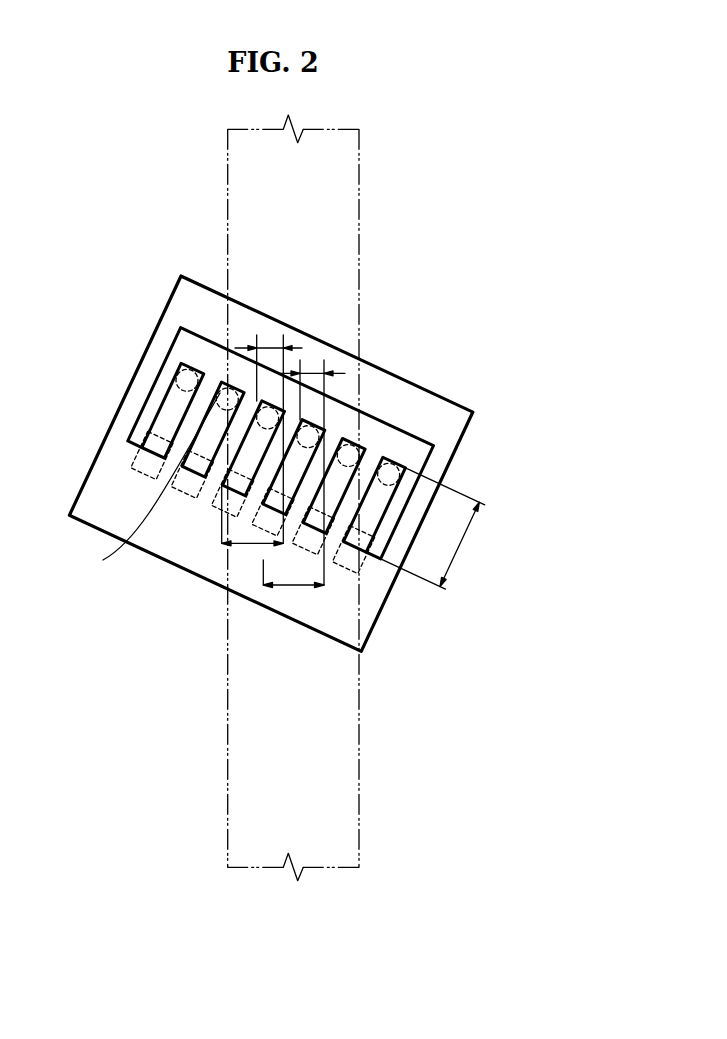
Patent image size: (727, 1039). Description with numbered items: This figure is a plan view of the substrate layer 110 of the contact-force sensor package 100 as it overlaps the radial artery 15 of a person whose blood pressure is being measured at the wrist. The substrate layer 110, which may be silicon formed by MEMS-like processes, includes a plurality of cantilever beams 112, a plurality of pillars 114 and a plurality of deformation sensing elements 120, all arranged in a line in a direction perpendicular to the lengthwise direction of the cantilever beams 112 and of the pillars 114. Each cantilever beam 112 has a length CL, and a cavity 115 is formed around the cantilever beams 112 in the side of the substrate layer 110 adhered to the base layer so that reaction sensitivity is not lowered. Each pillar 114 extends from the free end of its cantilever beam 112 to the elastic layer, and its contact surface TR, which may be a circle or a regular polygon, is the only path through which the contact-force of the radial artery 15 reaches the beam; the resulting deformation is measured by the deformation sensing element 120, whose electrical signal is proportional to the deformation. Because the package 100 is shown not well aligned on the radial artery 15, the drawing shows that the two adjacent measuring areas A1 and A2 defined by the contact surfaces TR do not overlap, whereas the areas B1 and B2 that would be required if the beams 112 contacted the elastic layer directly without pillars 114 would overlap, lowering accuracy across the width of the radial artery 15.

The radial artery 15 is at (360, 224).
The contact-force sensor package 100 is at (505, 360).
The substrate layer 110 is at (450, 466).
The cantilever beam 112 is at (161, 405).
The pillar 114 is at (181, 362).
The cavity 115 is at (376, 462).
The deformation sensing element 120 is at (140, 452).
The contact surface TR is at (150, 490).
The area required for measuring blood pressure A1 is at (310, 370).
The area required for measuring blood pressure A2 is at (270, 345).
The area required for measuring blood pressure B1 is at (293, 584).
The area required for measuring blood pressure B2 is at (253, 526).
The length of the cantilever beam CL is at (425, 528).